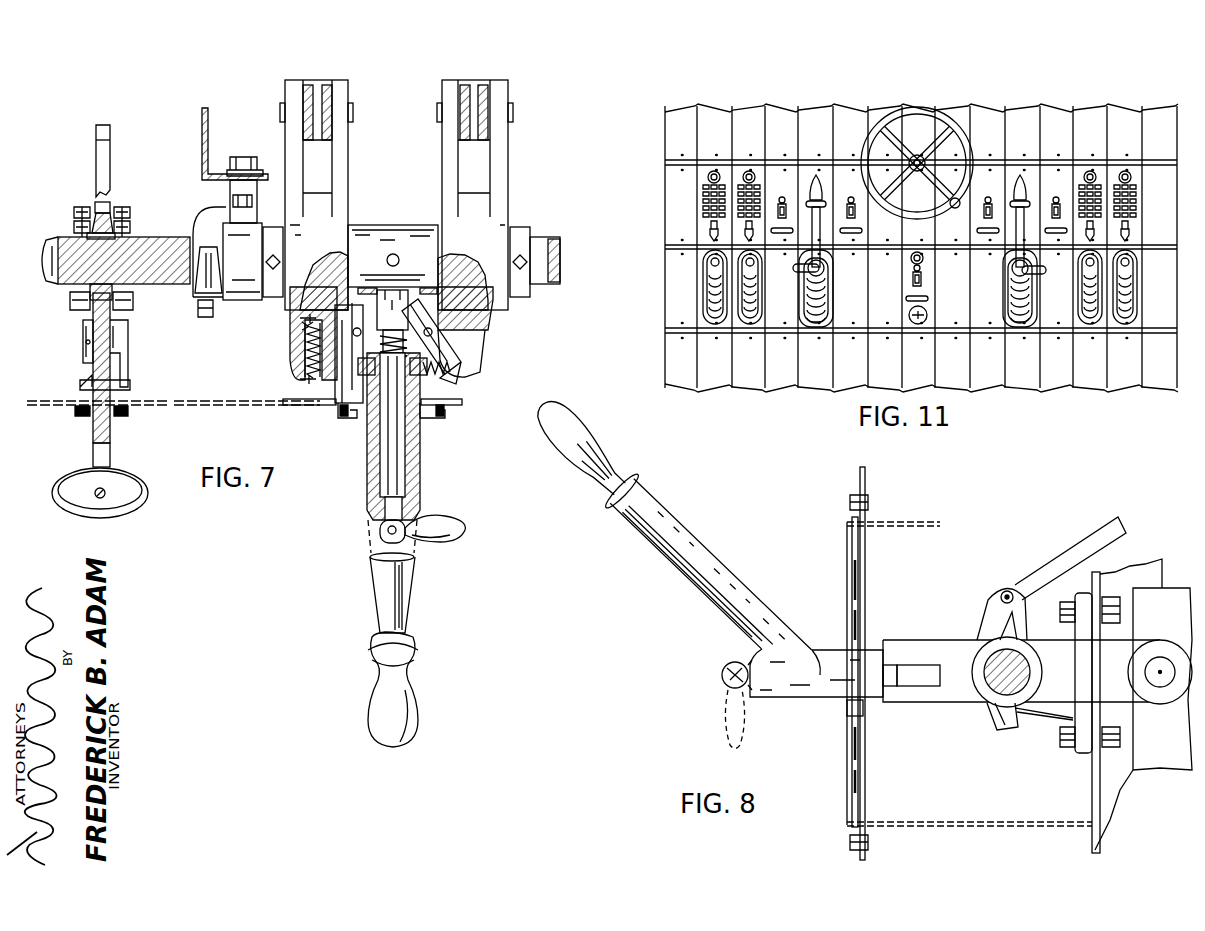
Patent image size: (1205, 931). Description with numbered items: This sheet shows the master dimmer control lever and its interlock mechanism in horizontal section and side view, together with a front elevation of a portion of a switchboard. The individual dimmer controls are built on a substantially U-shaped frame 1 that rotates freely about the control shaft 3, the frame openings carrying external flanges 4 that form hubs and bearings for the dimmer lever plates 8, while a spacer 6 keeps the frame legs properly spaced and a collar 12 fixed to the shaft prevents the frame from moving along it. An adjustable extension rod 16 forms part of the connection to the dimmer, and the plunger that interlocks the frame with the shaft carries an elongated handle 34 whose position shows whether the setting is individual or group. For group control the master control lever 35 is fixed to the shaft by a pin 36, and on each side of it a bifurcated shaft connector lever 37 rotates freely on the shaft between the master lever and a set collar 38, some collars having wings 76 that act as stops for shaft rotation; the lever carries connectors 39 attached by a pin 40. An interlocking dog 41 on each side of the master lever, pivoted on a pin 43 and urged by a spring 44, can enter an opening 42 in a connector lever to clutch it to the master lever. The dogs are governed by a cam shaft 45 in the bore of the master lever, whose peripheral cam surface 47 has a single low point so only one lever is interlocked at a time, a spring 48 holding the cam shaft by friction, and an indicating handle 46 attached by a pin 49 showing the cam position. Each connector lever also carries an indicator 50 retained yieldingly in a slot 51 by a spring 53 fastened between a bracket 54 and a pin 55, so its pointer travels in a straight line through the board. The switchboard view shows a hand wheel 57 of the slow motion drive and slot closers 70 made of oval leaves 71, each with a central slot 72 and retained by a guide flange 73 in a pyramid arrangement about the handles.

In FIG. 7, the U-shaped frame 1 is at (84, 342).
In FIG. 7, the control shaft 3 is at (45, 236).
In FIG. 7, the external flanges 4 is at (84, 235).
In FIG. 7, the spacer 6 is at (88, 327).
In FIG. 7, the dimmer lever plate 8 is at (80, 206).
In FIG. 7, the collar 12 is at (88, 290).
In FIG. 7, the adjustable extension rod 16 is at (96, 131).
In FIG. 7, the handle 34 is at (149, 493).
In FIG. 11, the handle 34 is at (703, 264).
In FIG. 7, the master control lever 35 is at (410, 606).
In FIG. 11, the master control lever 35 is at (811, 222).
In FIG. 8, the master control lever 35 is at (667, 503).
In FIG. 7, the pin 36 is at (393, 254).
In FIG. 7, the shaft connector lever 37 is at (445, 170).
In FIG. 7, the set collar 38 is at (196, 226).
In FIG. 7, the connectors 39 is at (460, 93).
In FIG. 7, the pin 40 is at (280, 108).
In FIG. 7, the interlocking dog 41 is at (441, 348).
In FIG. 8, the interlocking dog 41 is at (915, 670).
In FIG. 7, the opening 42 is at (462, 362).
In FIG. 8, the opening 42 is at (882, 665).
In FIG. 7, the pin 43 is at (306, 337).
In FIG. 7, the spring 44 is at (446, 380).
In FIG. 7, the cam shaft 45 is at (388, 473).
In FIG. 7, the indicating handle 46 is at (466, 531).
In FIG. 11, the indicating handle 46 is at (1043, 326).
In FIG. 8, the indicating handle 46 is at (750, 740).
In FIG. 7, the peripheral cam surface 47 is at (301, 318).
In FIG. 7, the spring 48 is at (306, 350).
In FIG. 7, the pin 49 is at (388, 531).
In FIG. 7, the indicator 50 is at (338, 408).
In FIG. 7, the slot 51 is at (335, 397).
In FIG. 7, the spring 53 is at (306, 362).
In FIG. 7, the bracket 54 is at (301, 381).
In FIG. 7, the pin 55 is at (301, 328).
In FIG. 11, the hand wheel 57 is at (957, 117).
In FIG. 11, the slot closers 70 is at (818, 326).
In FIG. 8, the slot closers 70 is at (852, 812).
In FIG. 8, the leaves 71 is at (860, 756).
In FIG. 8, the slot 72 is at (860, 712).
In FIG. 11, the guide flange 73 is at (720, 334).
In FIG. 7, the wings 76 is at (203, 290).